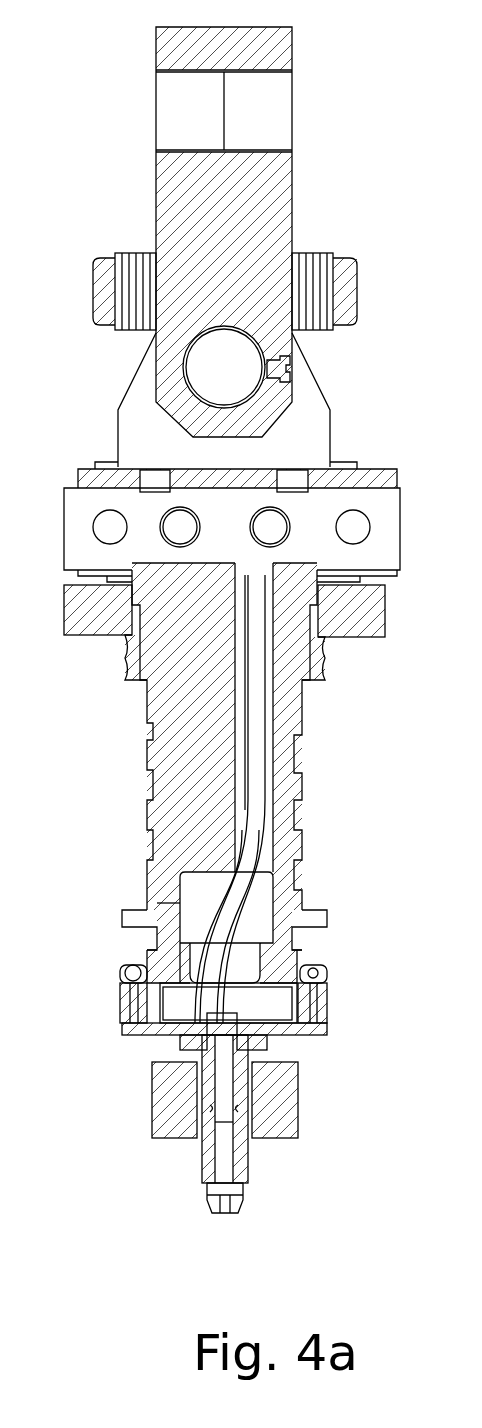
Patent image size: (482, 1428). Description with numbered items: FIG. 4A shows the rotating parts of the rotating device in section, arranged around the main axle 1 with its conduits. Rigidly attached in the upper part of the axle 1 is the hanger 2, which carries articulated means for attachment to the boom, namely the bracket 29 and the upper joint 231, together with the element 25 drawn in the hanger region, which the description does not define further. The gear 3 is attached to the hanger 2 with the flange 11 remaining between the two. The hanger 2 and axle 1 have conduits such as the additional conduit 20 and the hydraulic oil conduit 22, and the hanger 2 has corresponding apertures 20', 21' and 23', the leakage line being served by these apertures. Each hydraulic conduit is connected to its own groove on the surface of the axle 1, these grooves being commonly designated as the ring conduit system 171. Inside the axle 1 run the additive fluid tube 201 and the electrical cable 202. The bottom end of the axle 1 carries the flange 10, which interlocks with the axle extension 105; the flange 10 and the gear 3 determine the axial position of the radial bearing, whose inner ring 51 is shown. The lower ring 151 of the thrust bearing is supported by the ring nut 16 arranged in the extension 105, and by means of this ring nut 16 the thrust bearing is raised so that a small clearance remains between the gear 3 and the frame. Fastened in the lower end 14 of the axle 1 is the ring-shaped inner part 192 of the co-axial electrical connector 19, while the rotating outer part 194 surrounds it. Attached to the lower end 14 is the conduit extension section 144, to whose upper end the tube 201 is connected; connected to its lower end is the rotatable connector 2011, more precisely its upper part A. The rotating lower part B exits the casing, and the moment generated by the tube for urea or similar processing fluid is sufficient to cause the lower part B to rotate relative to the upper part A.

The upper joint 231 is at (255, 205).
The bracket 29 is at (307, 412).
The bearing 25 is at (208, 382).
The aperture 20' is at (409, 457).
The aperture 21' is at (343, 474).
The hydraulic oil conduit 22 is at (157, 522).
The hanger 2 is at (383, 513).
The aperture 23' is at (69, 511).
The flange 11 is at (365, 580).
The main axle 1 is at (182, 632).
The gear 3 is at (344, 626).
The additive fluid tube 201 is at (255, 673).
The inner ring of bearing 51 is at (320, 677).
The additional conduit 20 is at (163, 799).
The ring conduit system 171 is at (333, 863).
The electrical cable 202 is at (222, 912).
The flange 10 is at (310, 913).
The axle extension 105 is at (303, 945).
The lower ring of bearing 151 is at (327, 988).
The ring nut 16 is at (327, 1002).
The conduit extension section 144 is at (183, 1073).
The lower end 14 is at (285, 1035).
The rotating outer part 194 is at (172, 1098).
The inner part 192 is at (290, 1105).
The upper end A is at (243, 1157).
The lower part B is at (238, 1198).
The electrical distributor 19 is at (160, 1160).
The rotatable connector 2011 is at (192, 1172).